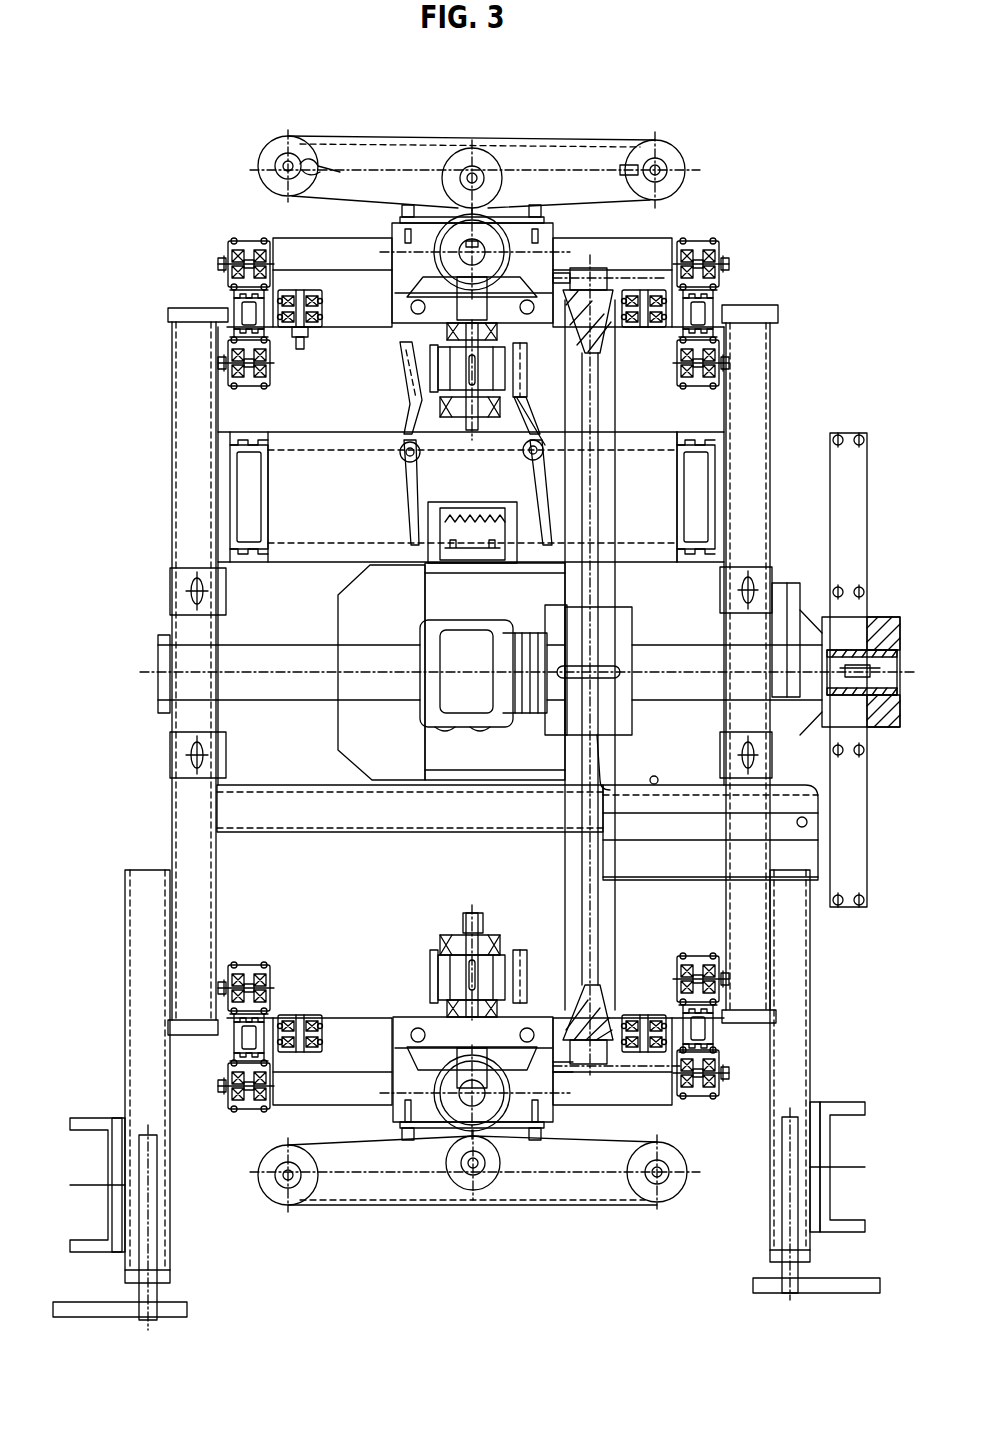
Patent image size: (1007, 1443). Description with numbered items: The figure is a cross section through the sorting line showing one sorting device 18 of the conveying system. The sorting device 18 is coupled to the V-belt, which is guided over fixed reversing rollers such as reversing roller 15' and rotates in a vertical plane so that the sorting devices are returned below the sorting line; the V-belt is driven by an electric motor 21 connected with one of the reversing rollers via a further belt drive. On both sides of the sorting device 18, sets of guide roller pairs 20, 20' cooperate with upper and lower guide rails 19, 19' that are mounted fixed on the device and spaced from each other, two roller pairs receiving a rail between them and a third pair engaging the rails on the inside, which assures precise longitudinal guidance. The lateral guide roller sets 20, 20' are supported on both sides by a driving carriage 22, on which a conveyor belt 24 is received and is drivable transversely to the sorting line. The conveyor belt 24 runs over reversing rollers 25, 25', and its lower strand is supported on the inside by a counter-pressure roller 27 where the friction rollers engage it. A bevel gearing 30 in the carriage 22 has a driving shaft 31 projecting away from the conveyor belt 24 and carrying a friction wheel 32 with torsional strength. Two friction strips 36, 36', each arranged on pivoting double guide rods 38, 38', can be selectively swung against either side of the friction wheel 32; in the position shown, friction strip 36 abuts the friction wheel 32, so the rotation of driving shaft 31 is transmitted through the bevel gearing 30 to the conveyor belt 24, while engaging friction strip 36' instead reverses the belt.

The reversing roller 15' is at (582, 665).
The sorting device 18 is at (591, 134).
The guide rail 19 is at (738, 698).
The guide rail 19' is at (203, 697).
The guide roller pair 20 is at (709, 653).
The guide roller pair 20' is at (236, 657).
The electric motor 21 is at (330, 734).
The driving carriage 22 is at (568, 250).
The conveyor belt 24 is at (390, 136).
The reversing roller 25 is at (679, 155).
The reversing roller 25' is at (292, 139).
The counter-pressure roller 27 is at (483, 158).
The bevel gearing 30 is at (402, 259).
The driving shaft 31 is at (468, 420).
The friction wheel 32 is at (398, 348).
The friction strip 36 is at (588, 673).
The friction strip 36' is at (385, 674).
The double guide rod 38 is at (592, 492).
The double guide rod 38' is at (372, 492).